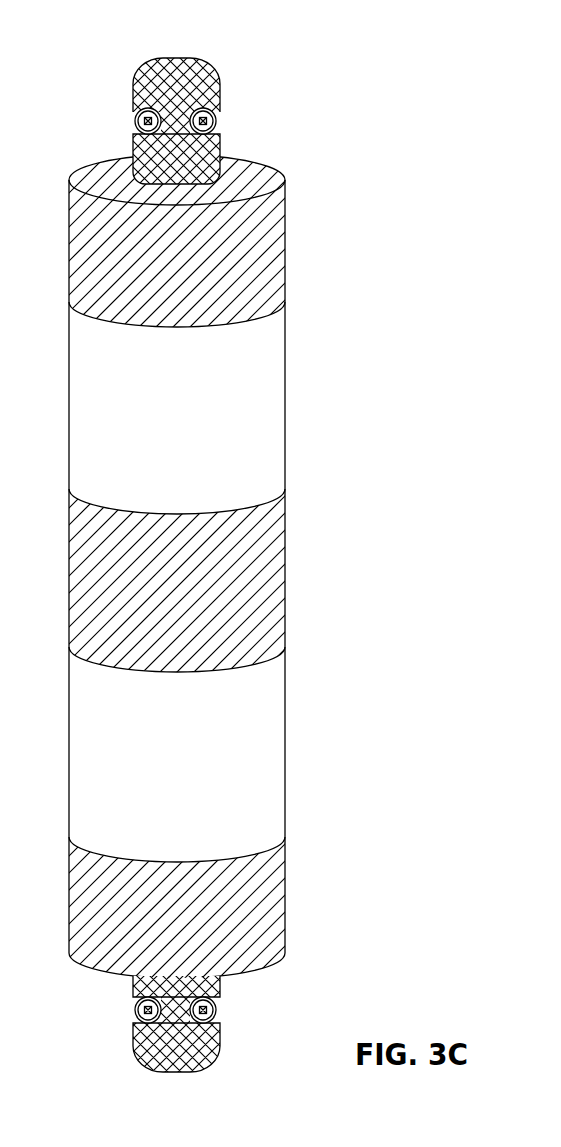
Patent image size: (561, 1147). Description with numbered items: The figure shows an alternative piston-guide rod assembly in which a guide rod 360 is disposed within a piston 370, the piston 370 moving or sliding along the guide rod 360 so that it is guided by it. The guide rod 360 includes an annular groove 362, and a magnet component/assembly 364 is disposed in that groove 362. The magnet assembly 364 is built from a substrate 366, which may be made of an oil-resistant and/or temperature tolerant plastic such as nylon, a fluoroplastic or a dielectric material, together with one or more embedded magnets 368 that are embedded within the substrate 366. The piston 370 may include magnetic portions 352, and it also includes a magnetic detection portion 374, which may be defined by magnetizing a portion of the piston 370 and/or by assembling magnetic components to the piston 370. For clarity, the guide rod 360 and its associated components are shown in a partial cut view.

The magnetic portions 352 is at (287, 205).
The guide rod 360 is at (182, 102).
The groove 362 is at (141, 105).
The magnet component/assembly 364 is at (138, 111).
The substrate 366 is at (216, 108).
The embedded magnets 368 is at (217, 131).
The piston 370 is at (383, 160).
The magnetic detection portion 374 is at (287, 522).